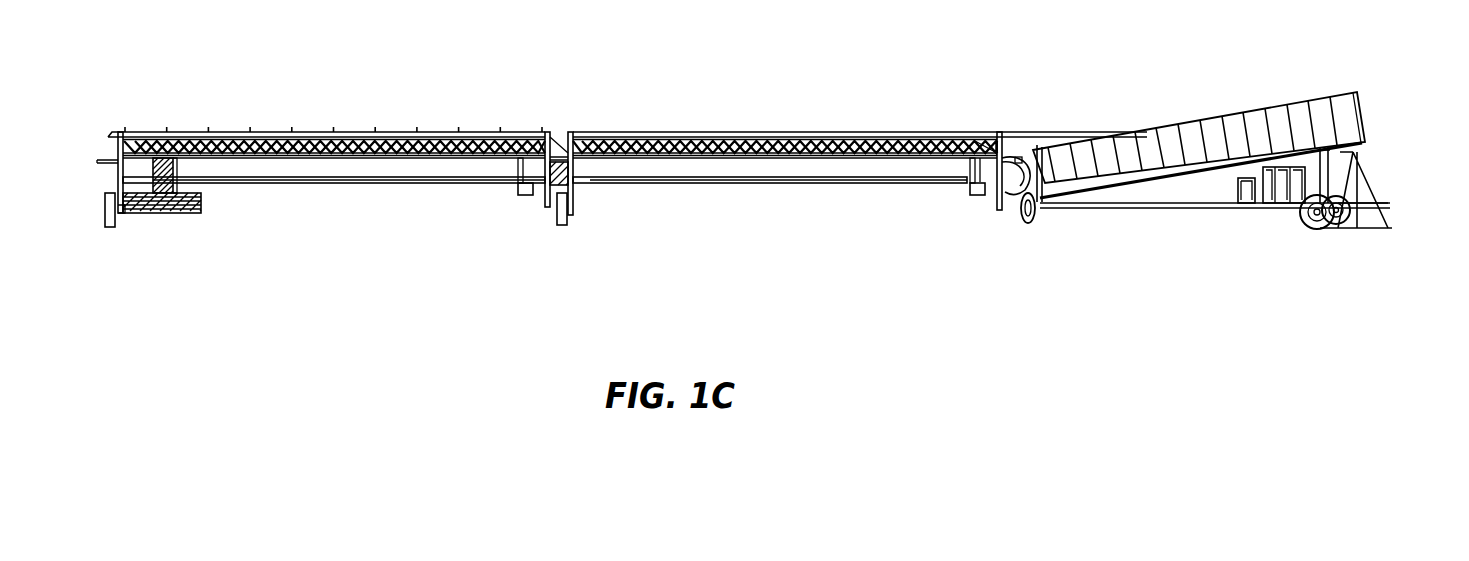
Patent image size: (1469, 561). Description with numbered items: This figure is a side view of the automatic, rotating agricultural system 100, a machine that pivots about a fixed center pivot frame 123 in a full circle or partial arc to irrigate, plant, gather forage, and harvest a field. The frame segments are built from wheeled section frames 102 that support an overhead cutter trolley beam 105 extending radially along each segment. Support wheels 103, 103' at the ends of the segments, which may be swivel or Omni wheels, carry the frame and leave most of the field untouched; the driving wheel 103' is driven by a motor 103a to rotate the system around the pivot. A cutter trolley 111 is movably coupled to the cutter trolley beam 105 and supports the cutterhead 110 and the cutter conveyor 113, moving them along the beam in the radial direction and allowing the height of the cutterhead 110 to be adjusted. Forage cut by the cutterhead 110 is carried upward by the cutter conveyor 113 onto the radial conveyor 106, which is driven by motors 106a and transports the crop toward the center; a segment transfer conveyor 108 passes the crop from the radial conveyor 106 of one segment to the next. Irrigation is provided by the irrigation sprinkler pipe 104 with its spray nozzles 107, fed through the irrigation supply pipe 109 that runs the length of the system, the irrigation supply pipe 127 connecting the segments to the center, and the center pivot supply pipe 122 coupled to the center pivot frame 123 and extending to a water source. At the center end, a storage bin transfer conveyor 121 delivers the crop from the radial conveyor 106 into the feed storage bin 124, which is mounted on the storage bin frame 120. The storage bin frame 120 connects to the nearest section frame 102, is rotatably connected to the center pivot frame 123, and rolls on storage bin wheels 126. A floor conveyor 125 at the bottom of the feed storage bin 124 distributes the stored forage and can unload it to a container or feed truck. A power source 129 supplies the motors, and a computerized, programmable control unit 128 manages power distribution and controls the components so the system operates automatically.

The automatic, rotating agricultural system 100 is at (178, 31).
The section frame 102 is at (118, 137).
The support wheel 103 is at (567, 230).
The driving wheel 103' is at (91, 236).
The motor 103a is at (124, 214).
The irrigation sprinkler pipe 104 is at (378, 140).
The cutter trolley beam 105 is at (264, 152).
The radial conveyor 106 is at (376, 185).
The motor 106a is at (518, 189).
The irrigation spray nozzle 107 is at (456, 129).
The segment transfer conveyor 108 is at (546, 186).
The irrigation supply pipe 109 is at (657, 138).
The cutterhead 110 is at (160, 205).
The cutter trolley 111 is at (177, 172).
The cutter conveyor 113 is at (163, 158).
The storage bin frame 120 is at (1122, 209).
The storage bin transfer conveyor 121 is at (1009, 157).
The center pivot supply pipe 122 is at (1354, 182).
The center pivot frame 123 is at (1383, 217).
The feed storage bin 124 is at (1215, 122).
The floor conveyor 125 is at (1331, 188).
The storage bin wheel 126 is at (1032, 223).
The irrigation supply pipe 127 is at (1080, 134).
The computerized, programmable control unit 128 is at (1241, 200).
The power source 129 is at (1280, 204).